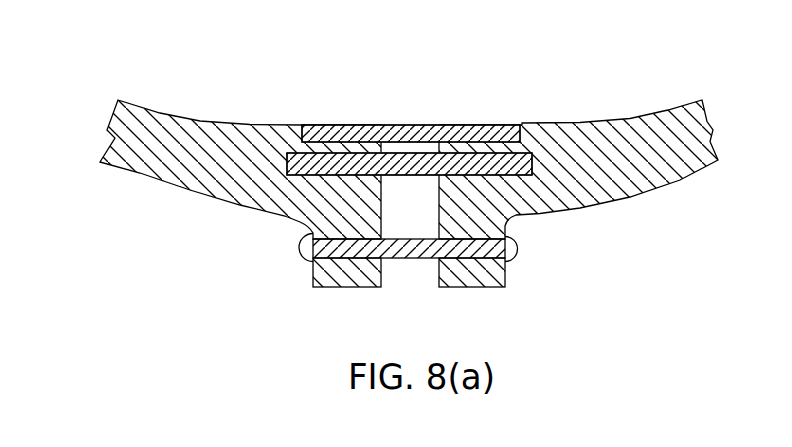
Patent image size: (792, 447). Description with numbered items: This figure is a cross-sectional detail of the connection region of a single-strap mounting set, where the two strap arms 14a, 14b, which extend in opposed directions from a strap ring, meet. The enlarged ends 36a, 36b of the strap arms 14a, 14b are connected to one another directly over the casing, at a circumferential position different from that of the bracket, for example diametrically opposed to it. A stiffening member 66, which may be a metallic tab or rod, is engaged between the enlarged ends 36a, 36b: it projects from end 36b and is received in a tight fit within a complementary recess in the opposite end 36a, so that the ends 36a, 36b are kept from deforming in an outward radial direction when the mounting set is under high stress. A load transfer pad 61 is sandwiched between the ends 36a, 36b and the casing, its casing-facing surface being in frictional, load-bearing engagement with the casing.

The strap arm 14a is at (190, 168).
The strap arm 14b is at (677, 175).
The load transfer pad 61 is at (347, 127).
The stiffening member 66 is at (472, 158).
The enlarged end of strap arm 36a is at (308, 222).
The enlarged end of strap arm 36b is at (493, 221).